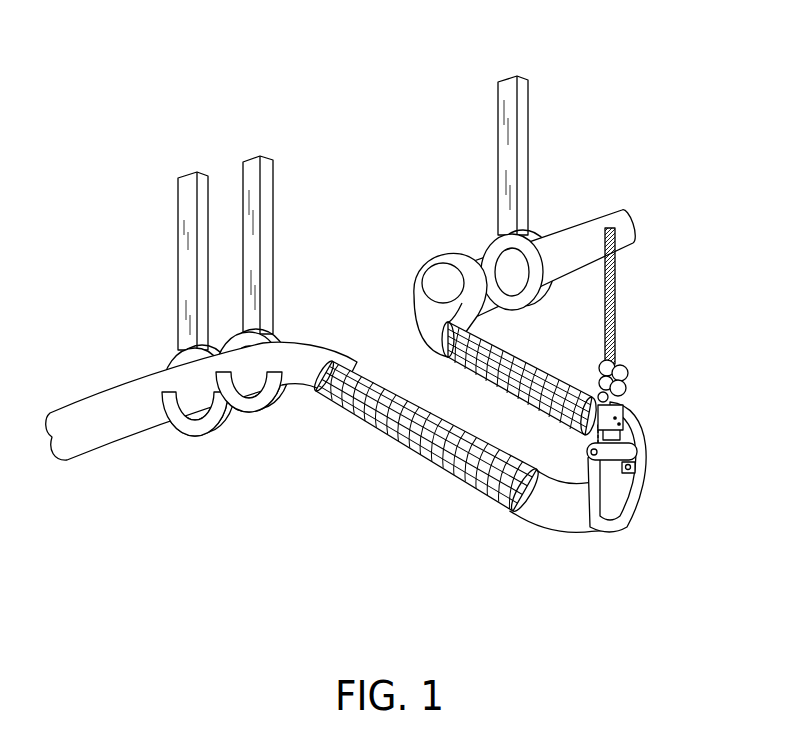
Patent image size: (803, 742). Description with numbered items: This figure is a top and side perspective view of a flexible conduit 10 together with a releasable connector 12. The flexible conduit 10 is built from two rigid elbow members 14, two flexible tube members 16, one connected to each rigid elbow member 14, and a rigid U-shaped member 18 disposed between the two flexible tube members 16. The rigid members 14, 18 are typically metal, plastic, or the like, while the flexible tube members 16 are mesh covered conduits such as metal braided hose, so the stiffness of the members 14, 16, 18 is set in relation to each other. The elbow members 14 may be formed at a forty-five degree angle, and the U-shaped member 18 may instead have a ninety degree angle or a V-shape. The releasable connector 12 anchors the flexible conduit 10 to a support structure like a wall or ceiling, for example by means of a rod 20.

The flexible conduit 10 is at (378, 249).
The releasable connector 12 is at (650, 453).
The rigid elbow member 14 is at (308, 350).
The flexible tube member 16 is at (537, 370).
The rigid U-shaped member 18 is at (563, 517).
The rod 20 is at (614, 320).